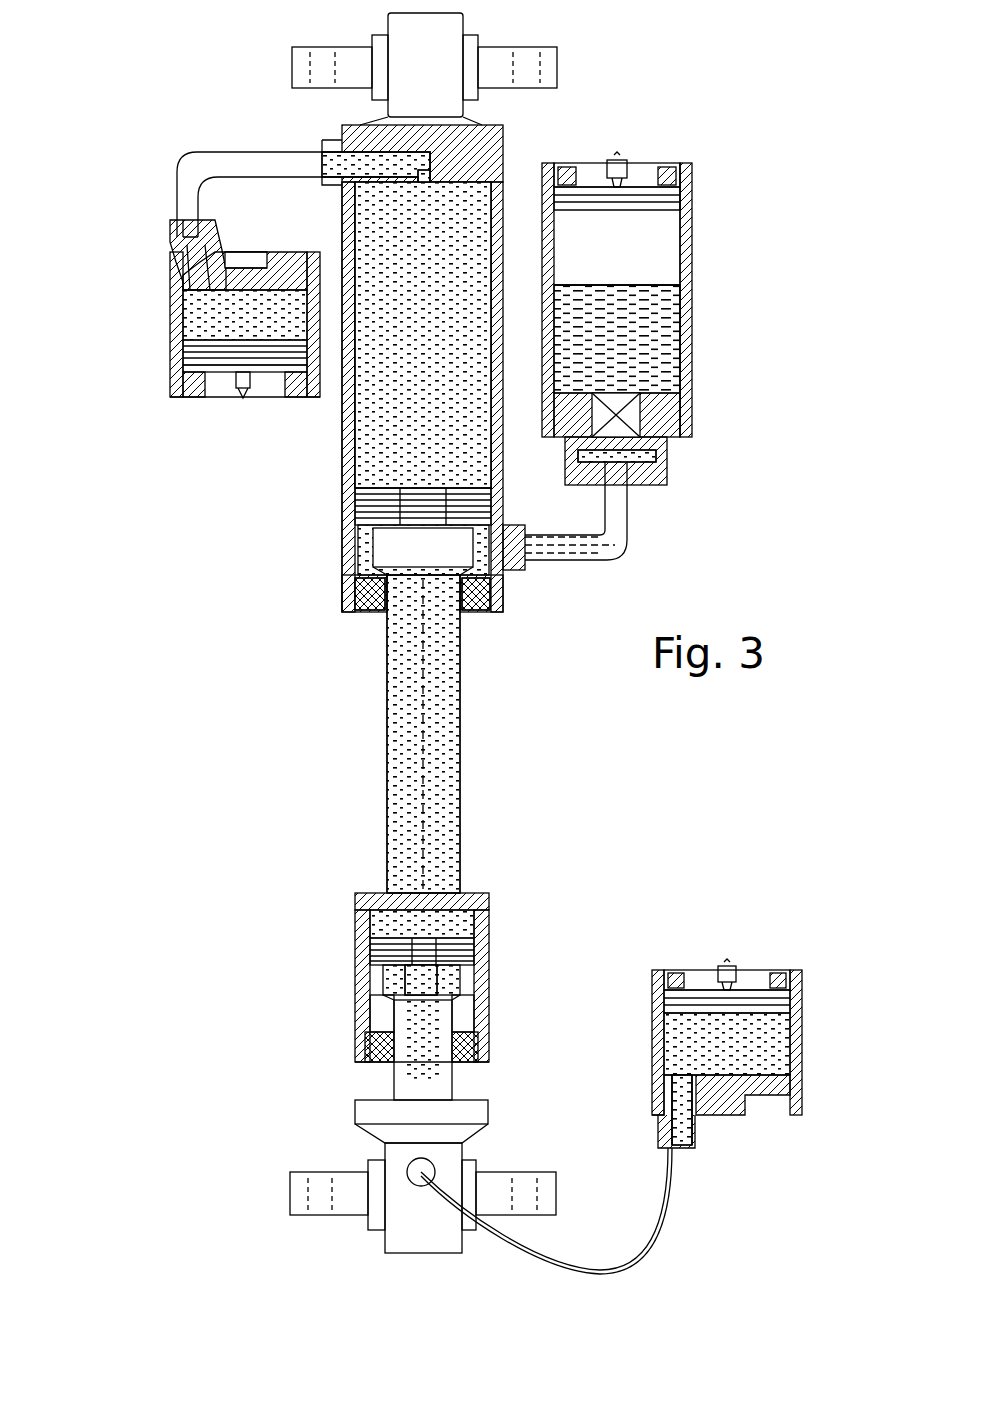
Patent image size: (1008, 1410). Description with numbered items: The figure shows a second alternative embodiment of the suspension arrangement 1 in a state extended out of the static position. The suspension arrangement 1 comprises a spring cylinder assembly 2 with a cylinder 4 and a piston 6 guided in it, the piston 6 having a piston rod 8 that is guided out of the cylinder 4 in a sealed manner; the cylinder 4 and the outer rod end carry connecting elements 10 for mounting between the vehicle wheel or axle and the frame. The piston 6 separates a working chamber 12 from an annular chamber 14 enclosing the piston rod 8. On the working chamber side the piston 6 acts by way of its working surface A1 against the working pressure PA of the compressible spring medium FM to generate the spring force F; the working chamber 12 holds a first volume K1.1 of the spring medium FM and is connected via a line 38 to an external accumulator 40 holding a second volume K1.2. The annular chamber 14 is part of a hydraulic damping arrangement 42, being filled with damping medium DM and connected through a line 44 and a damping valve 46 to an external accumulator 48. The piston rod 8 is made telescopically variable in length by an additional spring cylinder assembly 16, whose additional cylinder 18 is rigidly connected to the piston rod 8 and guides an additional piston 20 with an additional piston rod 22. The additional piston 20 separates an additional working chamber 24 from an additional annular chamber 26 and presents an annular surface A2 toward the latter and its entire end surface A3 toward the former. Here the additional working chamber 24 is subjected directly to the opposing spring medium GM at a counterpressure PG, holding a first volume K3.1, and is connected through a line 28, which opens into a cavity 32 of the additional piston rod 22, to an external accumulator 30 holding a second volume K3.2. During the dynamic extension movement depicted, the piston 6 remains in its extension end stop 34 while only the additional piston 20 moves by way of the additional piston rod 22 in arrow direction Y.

The suspension arrangement 1 is at (272, 905).
The spring cylinder assembly 2 is at (326, 611).
The cylinder 4 is at (342, 420).
The piston 6 is at (355, 464).
The piston rod 8 is at (455, 665).
The connecting element 10 is at (366, 1224).
The working chamber 12 is at (470, 396).
The annular chamber 14 is at (355, 556).
The additional spring cylinder assembly 16 is at (497, 903).
The additional cylinder 18 is at (470, 950).
The additional piston 20 is at (455, 973).
The additional piston rod 22 is at (446, 1018).
The additional working chamber 24 is at (430, 908).
The additional annular chamber 26 is at (380, 1012).
The line 28 is at (675, 1258).
The external accumulator 30 is at (803, 968).
The cavity 32 is at (418, 1066).
The extension end stop 34 is at (398, 585).
The line 38 is at (185, 162).
The external accumulator 40 is at (163, 383).
The hydraulic damping arrangement 42 is at (715, 406).
The line 44 is at (632, 545).
The damping valve 46 is at (667, 450).
The external accumulator 48 is at (694, 330).
The spring force F is at (425, 30).
The spring medium FM is at (418, 366).
The hydraulic damping medium DM is at (662, 287).
The opposing spring medium GM is at (398, 905).
The first volume of spring medium K1.1 is at (398, 238).
The second volume of spring medium K1.2 is at (218, 318).
The first volume of opposing spring medium K3.1 is at (480, 922).
The second volume of opposing spring medium K3.2 is at (768, 1042).
The working surface A1 is at (388, 482).
The annular surface A2 is at (386, 985).
The end surface A3 is at (418, 920).
The working pressure PA is at (425, 258).
The counterpressure PG is at (395, 918).
The arrow direction Y is at (424, 1185).